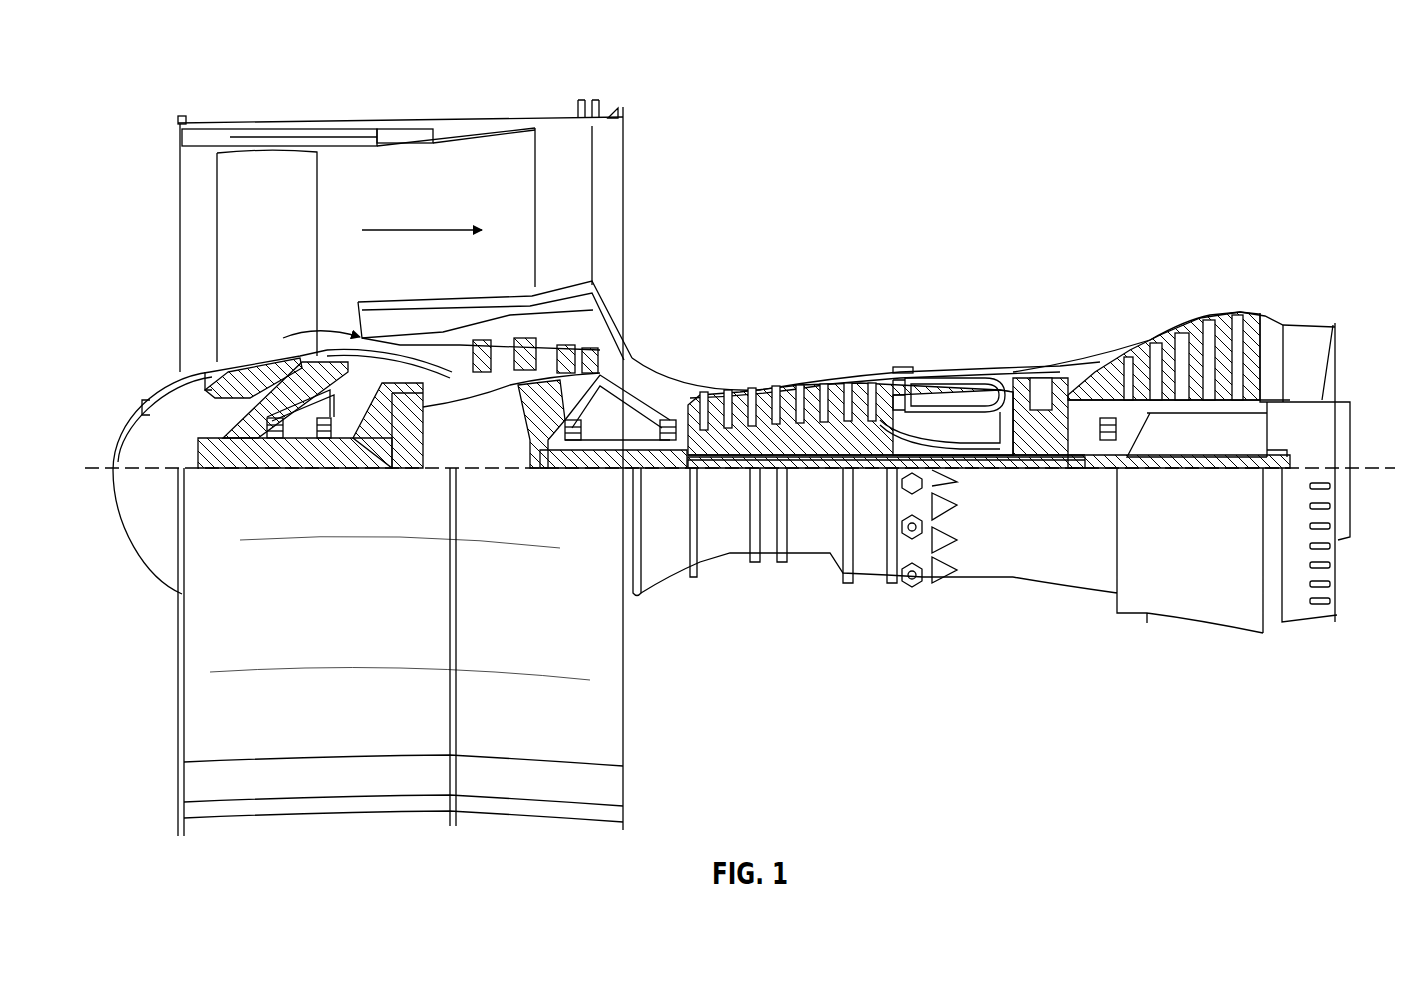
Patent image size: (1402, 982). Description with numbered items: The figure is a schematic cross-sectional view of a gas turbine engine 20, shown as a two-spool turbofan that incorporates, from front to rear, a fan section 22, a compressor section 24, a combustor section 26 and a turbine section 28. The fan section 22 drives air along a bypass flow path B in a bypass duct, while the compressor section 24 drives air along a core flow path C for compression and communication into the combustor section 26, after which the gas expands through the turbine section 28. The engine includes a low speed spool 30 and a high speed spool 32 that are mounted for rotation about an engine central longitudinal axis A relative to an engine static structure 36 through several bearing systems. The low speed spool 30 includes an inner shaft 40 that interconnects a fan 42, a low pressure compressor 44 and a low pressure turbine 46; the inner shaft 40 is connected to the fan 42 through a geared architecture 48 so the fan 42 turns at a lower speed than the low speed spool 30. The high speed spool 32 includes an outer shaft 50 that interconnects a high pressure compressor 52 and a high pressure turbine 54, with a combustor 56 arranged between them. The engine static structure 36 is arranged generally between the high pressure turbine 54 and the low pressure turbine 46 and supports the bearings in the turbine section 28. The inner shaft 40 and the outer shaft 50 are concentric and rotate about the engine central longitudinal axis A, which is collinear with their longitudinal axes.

The gas turbine engine 20 is at (1152, 97).
The fan section 22 is at (437, 107).
The compressor section 24 is at (452, 270).
The combustor section 26 is at (1013, 270).
The turbine section 28 is at (1283, 270).
The low speed spool 30 is at (830, 476).
The high speed spool 32 is at (870, 430).
The engine static structure 36 is at (872, 581).
The inner shaft 40 is at (641, 468).
The fan 42 is at (245, 248).
The low pressure compressor 44 is at (547, 353).
The low pressure turbine 46 is at (1200, 333).
The geared architecture 48 is at (410, 448).
The outer shaft 50 is at (977, 453).
The high pressure compressor 52 is at (797, 440).
The high pressure turbine 54 is at (1043, 372).
The combustor 56 is at (967, 395).
The engine central longitudinal axis A is at (1358, 467).
The bypass flow path B is at (420, 228).
The core flow path C is at (300, 333).